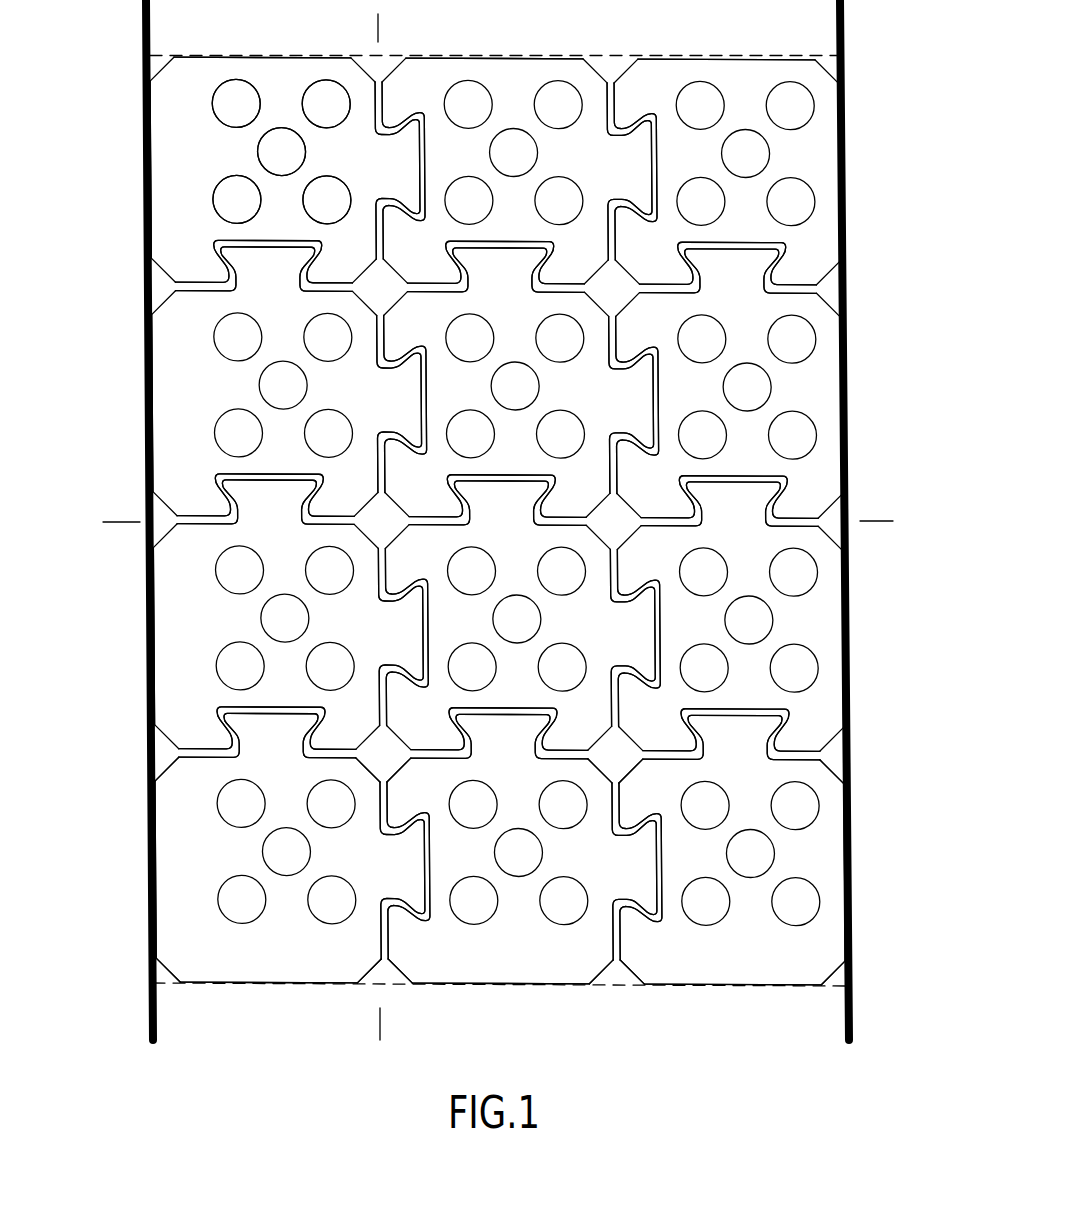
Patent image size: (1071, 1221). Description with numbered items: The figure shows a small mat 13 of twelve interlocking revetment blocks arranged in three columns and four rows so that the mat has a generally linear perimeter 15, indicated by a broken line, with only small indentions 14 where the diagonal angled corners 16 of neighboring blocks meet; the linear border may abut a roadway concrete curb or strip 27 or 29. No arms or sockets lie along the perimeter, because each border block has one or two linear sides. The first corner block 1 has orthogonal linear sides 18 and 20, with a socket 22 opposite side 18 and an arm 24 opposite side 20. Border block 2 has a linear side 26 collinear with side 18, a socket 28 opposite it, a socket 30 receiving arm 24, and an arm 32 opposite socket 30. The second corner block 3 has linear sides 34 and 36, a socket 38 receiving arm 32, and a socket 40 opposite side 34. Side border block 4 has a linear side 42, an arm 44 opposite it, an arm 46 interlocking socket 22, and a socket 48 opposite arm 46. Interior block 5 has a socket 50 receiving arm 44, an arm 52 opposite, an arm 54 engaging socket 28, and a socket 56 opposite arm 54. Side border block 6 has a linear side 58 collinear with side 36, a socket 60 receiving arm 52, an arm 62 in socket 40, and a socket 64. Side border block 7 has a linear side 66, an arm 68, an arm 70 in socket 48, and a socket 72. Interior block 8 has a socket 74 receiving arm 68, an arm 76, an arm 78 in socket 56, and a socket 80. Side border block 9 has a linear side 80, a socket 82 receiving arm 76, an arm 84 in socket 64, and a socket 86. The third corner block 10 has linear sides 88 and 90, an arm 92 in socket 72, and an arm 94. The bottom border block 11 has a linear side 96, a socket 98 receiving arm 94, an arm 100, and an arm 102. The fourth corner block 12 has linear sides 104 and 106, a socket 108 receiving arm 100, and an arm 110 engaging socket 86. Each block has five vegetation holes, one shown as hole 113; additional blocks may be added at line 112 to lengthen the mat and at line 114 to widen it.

The first corner block 1 is at (186, 211).
The border block 2 is at (517, 171).
The second corner block 3 is at (727, 172).
The side border block 4 is at (286, 382).
The interior block 5 is at (518, 383).
The side border block 6 is at (728, 384).
The side border block 7 is at (288, 615).
The interior block 8 is at (520, 616).
The side border block 9 is at (730, 617).
The third corner block 10 is at (289, 848).
The bottom border block 11 is at (521, 849).
The fourth corner block 12 is at (731, 850).
The mat 13 is at (475, 1071).
The indentions 14 is at (622, 986).
The perimeter 15 is at (380, 982).
The diagonal angled corners 16 is at (155, 980).
The first side 18 is at (270, 56).
The second side 20 is at (151, 143).
The interlocking socket 22 is at (245, 251).
The interlocking arm 24 is at (404, 160).
The linear side 26 is at (507, 56).
The roadway concrete curb or strip 27 is at (148, 55).
The interlocking socket 28 is at (490, 244).
The roadway concrete curb or strip 29 is at (840, 68).
The socket 30 is at (421, 173).
The interlocking arm 32 is at (636, 162).
The first linear side 34 is at (718, 56).
The second linear side 36 is at (836, 170).
The interlocking socket 38 is at (652, 178).
The interlocking socket 40 is at (725, 244).
The linear side 42 is at (155, 386).
The interlocking arm 44 is at (408, 390).
The interlocking arm 46 is at (277, 250).
The interlocking socket 48 is at (258, 482).
The interlocking socket 50 is at (420, 398).
The interlocking arm 52 is at (645, 390).
The interlocking arm 54 is at (503, 270).
The interlocking socket 56 is at (492, 482).
The linear side 58 is at (842, 416).
The interlocking socket 60 is at (655, 406).
The interlocking arm 62 is at (740, 270).
The interlocking socket 64 is at (727, 482).
The linear side 66 is at (152, 642).
The interlocking arm 68 is at (405, 627).
The interlocking arm 70 is at (272, 497).
The interlocking socket 72 is at (262, 720).
The interlocking socket 74 is at (425, 634).
The interlocking arm 76 is at (636, 626).
The interlocking arm 78 is at (504, 500).
The interlocking socket / linear side 80 is at (842, 638).
The interlocking socket 82 is at (655, 634).
The interlocking arm 84 is at (739, 508).
The interlocking socket 86 is at (727, 720).
The first linear side 88 is at (156, 858).
The second linear side 90 is at (259, 985).
The interlocking arm 92 is at (270, 738).
The interlocking arm 94 is at (410, 855).
The linear side 96 is at (503, 986).
The interlocking socket 98 is at (425, 868).
The interlocking arm 100 is at (640, 856).
The interlocking arm 102 is at (502, 740).
The first linear side 104 is at (736, 987).
The second linear side 106 is at (842, 874).
The interlocking socket 108 is at (657, 866).
The interlocking arm 110 is at (721, 753).
The line 112 is at (122, 518).
The vegetation hole 113 is at (232, 125).
The line 114 is at (381, 24).